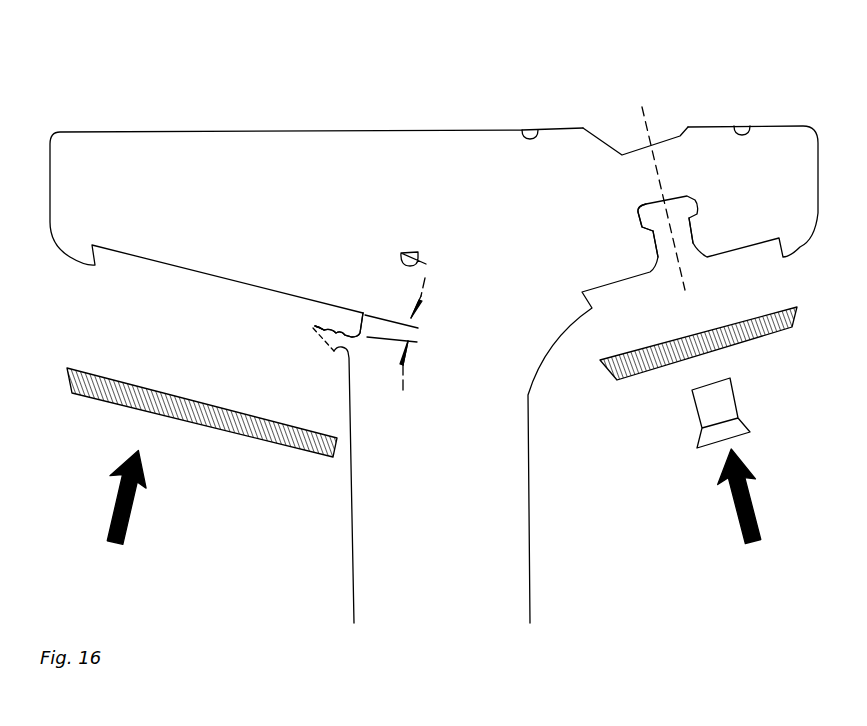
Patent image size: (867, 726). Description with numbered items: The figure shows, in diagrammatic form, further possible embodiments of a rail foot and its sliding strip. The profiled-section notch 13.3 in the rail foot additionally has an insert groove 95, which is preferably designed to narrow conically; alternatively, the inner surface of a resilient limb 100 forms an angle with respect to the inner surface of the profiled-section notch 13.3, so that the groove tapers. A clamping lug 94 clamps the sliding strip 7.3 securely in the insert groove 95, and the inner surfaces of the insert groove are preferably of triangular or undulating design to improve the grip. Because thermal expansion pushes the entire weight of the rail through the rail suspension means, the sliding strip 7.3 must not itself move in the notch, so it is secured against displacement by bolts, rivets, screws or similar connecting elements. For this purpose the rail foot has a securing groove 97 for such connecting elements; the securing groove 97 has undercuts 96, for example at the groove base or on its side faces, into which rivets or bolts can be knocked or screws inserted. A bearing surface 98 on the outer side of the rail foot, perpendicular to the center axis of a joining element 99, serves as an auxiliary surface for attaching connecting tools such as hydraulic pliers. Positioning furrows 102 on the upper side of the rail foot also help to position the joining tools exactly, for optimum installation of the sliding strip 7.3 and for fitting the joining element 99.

The profiled-section notch 13.3 is at (158, 267).
The sliding strip 7.3 is at (243, 427).
The clamping lug 94 is at (313, 327).
The insert groove 95 is at (333, 320).
The undercuts 96 is at (642, 218).
The securing groove 97 is at (677, 218).
The bearing surface 98 is at (665, 143).
The joining element 99 is at (732, 407).
The resilient limb 100 is at (327, 343).
The positioning furrows 102 is at (528, 122).